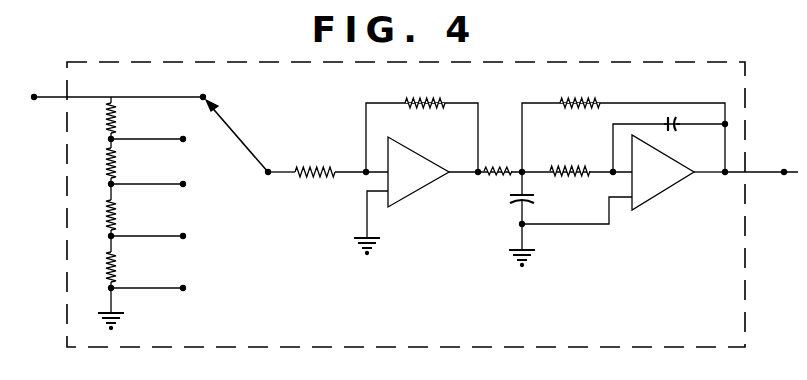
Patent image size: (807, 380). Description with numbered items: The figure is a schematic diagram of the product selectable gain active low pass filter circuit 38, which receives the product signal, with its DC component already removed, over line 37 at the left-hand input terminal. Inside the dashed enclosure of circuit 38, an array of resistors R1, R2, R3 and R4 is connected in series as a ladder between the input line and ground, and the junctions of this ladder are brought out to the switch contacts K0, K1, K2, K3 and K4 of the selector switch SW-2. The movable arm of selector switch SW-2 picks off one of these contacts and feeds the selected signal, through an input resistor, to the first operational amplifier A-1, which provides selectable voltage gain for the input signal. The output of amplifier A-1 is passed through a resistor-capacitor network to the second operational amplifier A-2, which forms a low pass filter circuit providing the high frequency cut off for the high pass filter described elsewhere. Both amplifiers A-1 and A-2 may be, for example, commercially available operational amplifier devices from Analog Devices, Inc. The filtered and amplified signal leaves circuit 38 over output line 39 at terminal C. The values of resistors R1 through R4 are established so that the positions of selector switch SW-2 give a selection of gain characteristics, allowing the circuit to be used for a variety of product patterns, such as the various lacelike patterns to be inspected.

The line 37 is at (50, 96).
The selectable gain low pass active filter circuit 38 is at (668, 66).
The output terminal 39 is at (760, 170).
The resistor R1 is at (115, 111).
The resistor R2 is at (115, 156).
The resistor R3 is at (115, 208).
The resistor R4 is at (115, 260).
The switch contact K0 is at (207, 88).
The switch contact K1 is at (157, 141).
The switch contact K2 is at (157, 186).
The switch contact K3 is at (157, 238).
The switch contact K4 is at (157, 290).
The selector switch SW-2 is at (244, 137).
The operational amplifier A-1 is at (395, 176).
The operational amplifier A-2 is at (618, 182).
The output C is at (784, 176).